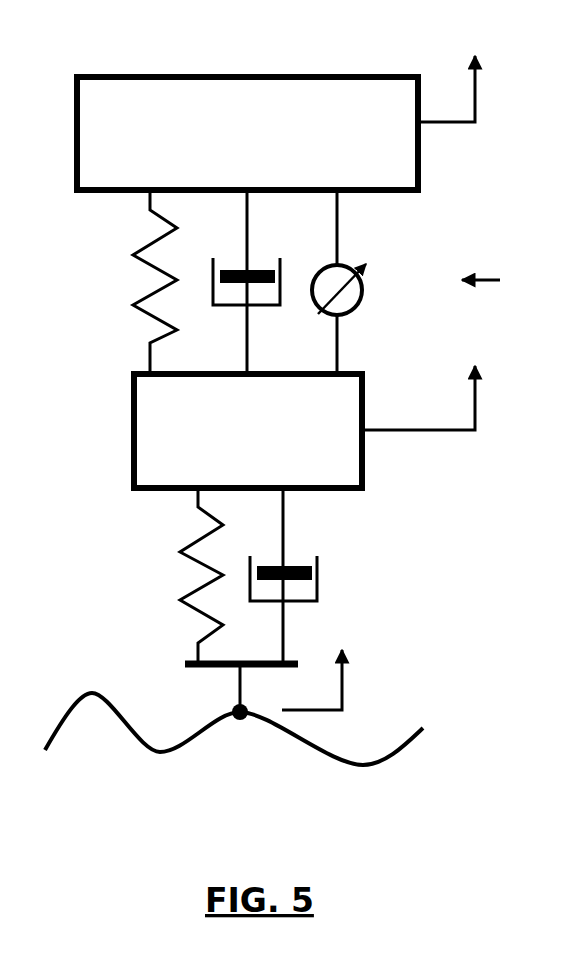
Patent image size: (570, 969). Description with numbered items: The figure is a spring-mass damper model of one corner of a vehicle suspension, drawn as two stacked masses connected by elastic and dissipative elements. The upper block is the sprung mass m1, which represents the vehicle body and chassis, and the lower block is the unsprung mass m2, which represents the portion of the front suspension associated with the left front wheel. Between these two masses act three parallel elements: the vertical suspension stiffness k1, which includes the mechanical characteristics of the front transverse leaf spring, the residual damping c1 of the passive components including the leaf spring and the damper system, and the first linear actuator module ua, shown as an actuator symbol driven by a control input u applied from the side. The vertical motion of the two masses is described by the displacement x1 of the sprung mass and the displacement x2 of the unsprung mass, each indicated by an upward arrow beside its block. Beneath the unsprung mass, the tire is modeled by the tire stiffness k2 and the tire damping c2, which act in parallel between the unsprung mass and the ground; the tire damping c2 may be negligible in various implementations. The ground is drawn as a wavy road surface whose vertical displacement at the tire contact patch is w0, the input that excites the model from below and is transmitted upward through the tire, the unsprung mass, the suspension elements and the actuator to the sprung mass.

The sprung mass m1 is at (247, 133).
The unsprung mass m2 is at (248, 431).
The vertical suspension stiffness k1 is at (125, 282).
The residual damping c1 is at (236, 282).
The first linear actuator module ua is at (373, 282).
The control input u is at (496, 280).
The vertical displacement of the sprung mass x1 is at (472, 73).
The vertical displacement of the unsprung mass x2 is at (444, 380).
The tire stiffness k2 is at (169, 575).
The tire damping c2 is at (309, 575).
The vertical displacement of the tire at the tire contact patch w0 is at (234, 680).